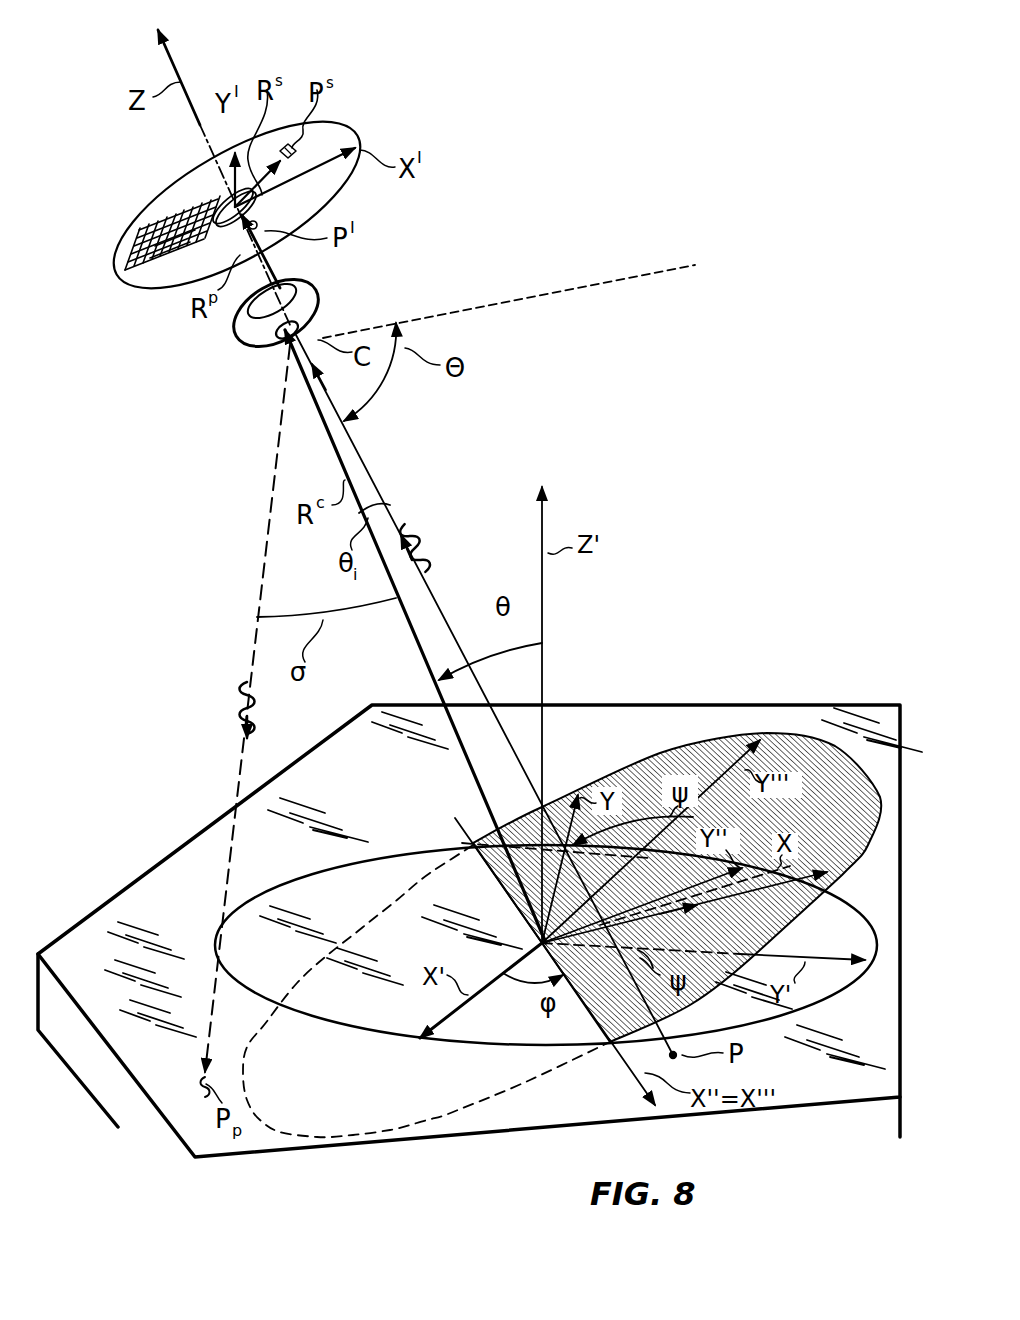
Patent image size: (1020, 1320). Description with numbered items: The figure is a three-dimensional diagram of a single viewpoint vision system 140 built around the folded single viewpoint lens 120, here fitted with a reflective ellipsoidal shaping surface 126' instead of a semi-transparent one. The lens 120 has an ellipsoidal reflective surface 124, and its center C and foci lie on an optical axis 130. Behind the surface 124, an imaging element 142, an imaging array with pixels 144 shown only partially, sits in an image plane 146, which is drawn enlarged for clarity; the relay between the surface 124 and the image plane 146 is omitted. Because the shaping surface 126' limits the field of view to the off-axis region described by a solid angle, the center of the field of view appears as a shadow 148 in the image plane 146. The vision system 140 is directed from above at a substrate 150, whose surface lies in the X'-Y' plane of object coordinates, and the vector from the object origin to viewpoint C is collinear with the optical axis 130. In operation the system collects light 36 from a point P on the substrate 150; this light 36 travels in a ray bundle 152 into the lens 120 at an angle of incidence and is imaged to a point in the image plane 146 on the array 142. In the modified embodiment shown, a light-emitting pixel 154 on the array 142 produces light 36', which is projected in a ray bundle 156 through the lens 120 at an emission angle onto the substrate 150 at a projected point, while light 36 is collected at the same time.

The light 36 is at (415, 636).
The projected light 36' is at (210, 709).
The folded single viewpoint lens 120 is at (238, 340).
The ellipsoidal reflective surface 124 is at (312, 296).
The reflective ellipsoidal shaping surface 126' is at (256, 358).
The optical axis 130 is at (205, 148).
The single viewpoint vision system 140 is at (456, 208).
The imaging element 142 is at (150, 228).
The pixels 144 is at (160, 280).
The image plane 146 is at (118, 270).
The shadow 148 is at (213, 203).
The substrate 150 is at (680, 718).
The ray bundle 152 is at (371, 466).
The pixel 154 is at (333, 123).
The ray bundle 156 is at (237, 782).